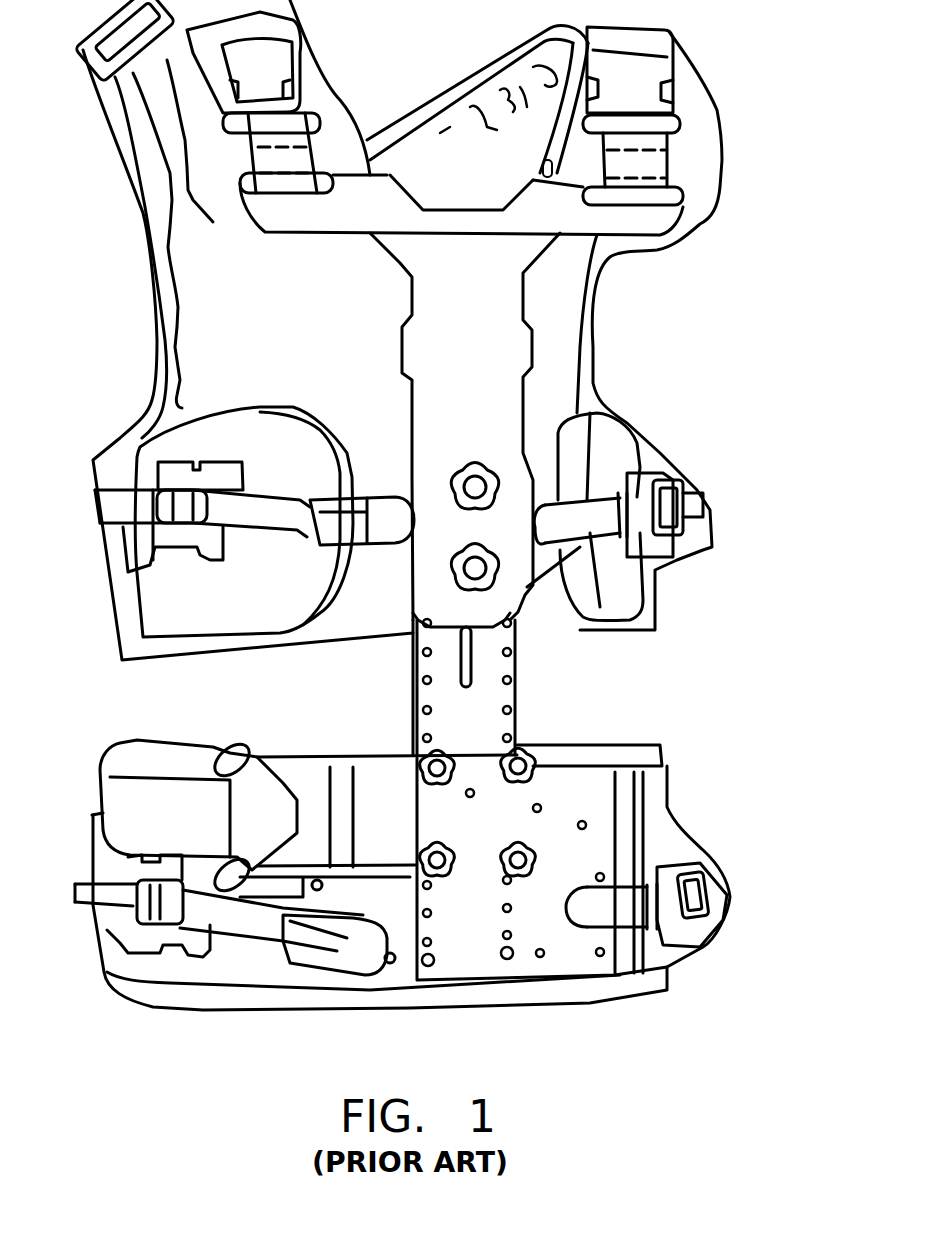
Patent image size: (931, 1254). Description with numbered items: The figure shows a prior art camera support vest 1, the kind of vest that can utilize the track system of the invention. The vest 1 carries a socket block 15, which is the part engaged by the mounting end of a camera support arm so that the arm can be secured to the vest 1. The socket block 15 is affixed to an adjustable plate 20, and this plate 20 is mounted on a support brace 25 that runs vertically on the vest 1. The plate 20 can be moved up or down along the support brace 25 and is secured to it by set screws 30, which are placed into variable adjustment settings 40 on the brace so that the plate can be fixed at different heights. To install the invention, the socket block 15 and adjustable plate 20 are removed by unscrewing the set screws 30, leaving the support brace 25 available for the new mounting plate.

The vest 1 is at (683, 295).
The socket block 15 is at (257, 813).
The adjustable plate 20 is at (468, 793).
The support brace 25 is at (507, 667).
The set screws 30 is at (450, 878).
The variable adjustment settings 40 is at (420, 697).